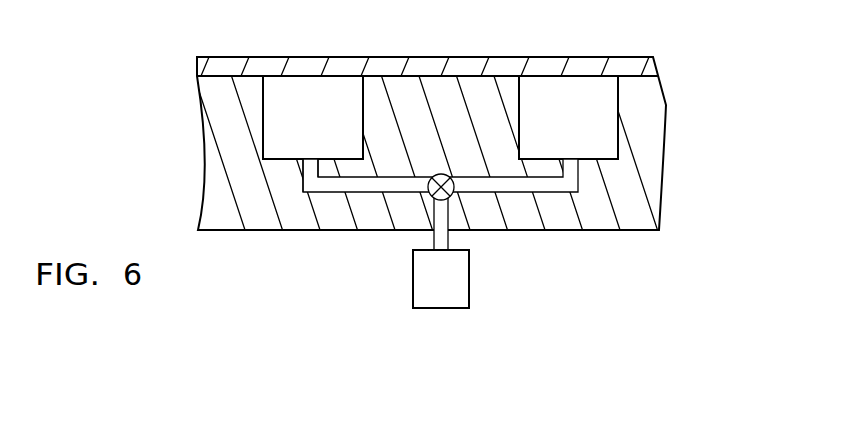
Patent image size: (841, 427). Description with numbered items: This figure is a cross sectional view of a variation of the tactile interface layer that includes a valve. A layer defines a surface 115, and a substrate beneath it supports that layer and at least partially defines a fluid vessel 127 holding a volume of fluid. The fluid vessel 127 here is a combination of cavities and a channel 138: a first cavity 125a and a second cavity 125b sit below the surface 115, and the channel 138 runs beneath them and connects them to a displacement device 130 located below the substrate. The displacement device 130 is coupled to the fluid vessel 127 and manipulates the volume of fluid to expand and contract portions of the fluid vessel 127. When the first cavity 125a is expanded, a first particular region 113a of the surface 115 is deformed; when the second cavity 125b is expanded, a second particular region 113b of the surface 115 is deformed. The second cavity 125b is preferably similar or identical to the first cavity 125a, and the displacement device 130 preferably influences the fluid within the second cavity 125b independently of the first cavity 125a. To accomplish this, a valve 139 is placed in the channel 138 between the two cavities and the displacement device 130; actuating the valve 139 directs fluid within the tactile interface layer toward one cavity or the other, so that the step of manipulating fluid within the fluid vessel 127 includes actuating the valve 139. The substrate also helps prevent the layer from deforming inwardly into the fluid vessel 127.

The first particular region 113a is at (308, 56).
The second particular region 113b is at (572, 56).
The surface 115 is at (632, 57).
The first cavity 125a is at (338, 123).
The second cavity 125b is at (595, 123).
The fluid vessel 127 is at (235, 243).
The channel 138 is at (572, 184).
The valve 139 is at (431, 193).
The displacement device 130 is at (453, 278).